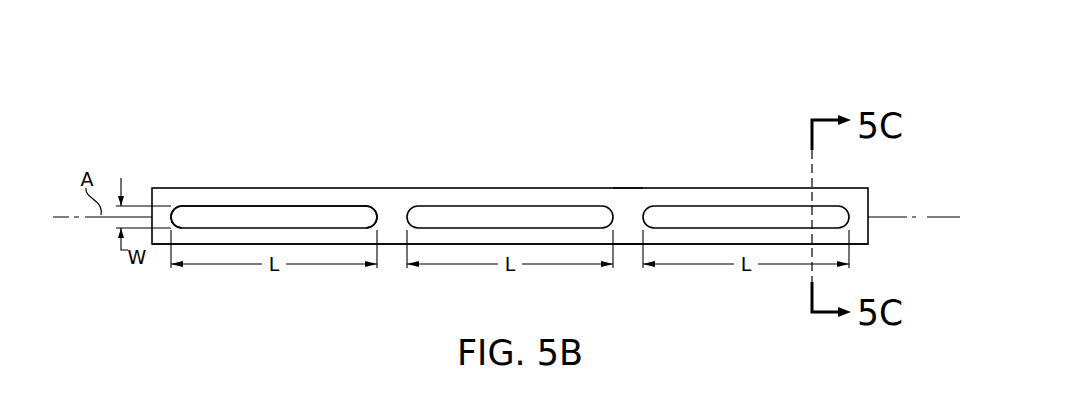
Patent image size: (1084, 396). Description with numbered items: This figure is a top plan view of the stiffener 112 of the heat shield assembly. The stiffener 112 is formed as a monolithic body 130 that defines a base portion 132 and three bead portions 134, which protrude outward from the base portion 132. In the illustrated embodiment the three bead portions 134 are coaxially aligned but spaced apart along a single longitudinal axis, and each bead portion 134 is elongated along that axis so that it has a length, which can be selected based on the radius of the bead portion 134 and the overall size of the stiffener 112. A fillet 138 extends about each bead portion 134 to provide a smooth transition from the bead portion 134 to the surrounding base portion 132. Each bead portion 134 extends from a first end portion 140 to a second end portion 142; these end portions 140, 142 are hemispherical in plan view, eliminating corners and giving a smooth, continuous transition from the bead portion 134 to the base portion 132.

The stiffener 112 is at (681, 118).
The monolithic body 130 is at (396, 247).
The base portion 132 is at (628, 211).
The bead portion 134 is at (269, 211).
The fillet 138 is at (318, 206).
The first end portion 140 is at (382, 196).
The second end portion 142 is at (167, 196).